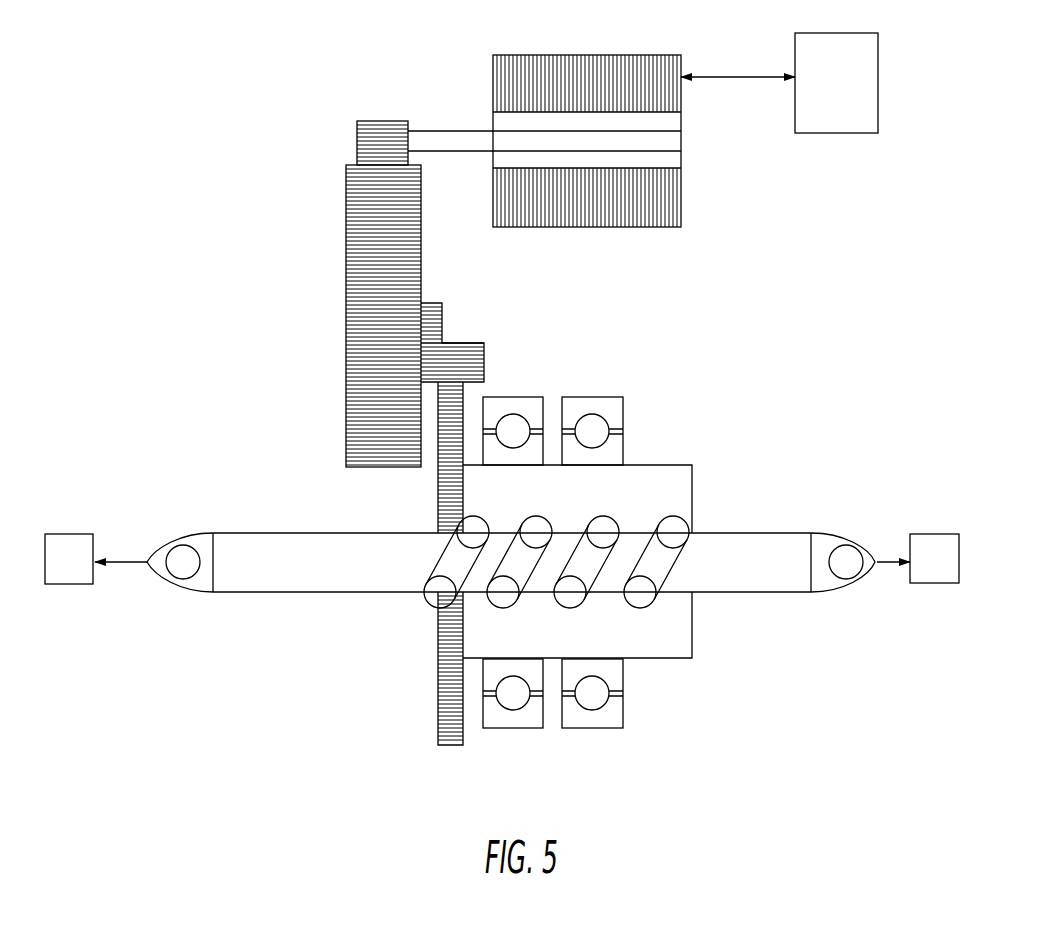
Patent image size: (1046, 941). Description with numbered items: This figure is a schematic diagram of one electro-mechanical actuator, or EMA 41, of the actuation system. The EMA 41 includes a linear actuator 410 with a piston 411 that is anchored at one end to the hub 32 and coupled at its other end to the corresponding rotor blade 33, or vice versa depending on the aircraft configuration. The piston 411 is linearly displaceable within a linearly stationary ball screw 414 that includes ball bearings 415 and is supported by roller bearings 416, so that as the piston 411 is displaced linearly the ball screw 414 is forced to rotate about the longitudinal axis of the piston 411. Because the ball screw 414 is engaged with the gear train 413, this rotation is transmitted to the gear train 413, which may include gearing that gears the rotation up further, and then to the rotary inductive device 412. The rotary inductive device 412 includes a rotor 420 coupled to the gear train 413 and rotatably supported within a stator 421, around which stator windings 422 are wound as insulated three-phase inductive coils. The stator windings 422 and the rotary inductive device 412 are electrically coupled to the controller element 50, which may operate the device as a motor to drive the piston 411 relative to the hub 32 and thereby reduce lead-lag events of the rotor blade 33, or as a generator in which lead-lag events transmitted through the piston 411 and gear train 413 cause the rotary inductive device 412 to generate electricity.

The controller element 50 is at (847, 98).
The rotary inductive device 412 is at (613, 185).
The rotor 420 is at (672, 141).
The stator 421 is at (660, 190).
The stator windings 422 is at (589, 213).
The gear train 413 is at (346, 293).
The ball screw 414 is at (680, 495).
The ball bearings 415 is at (673, 530).
The roller bearings 416 is at (615, 410).
The EMA 41 is at (511, 600).
The linear actuator 410 is at (328, 595).
The piston 411 is at (398, 575).
The hub 32 is at (80, 575).
The rotor blade 33 is at (945, 573).